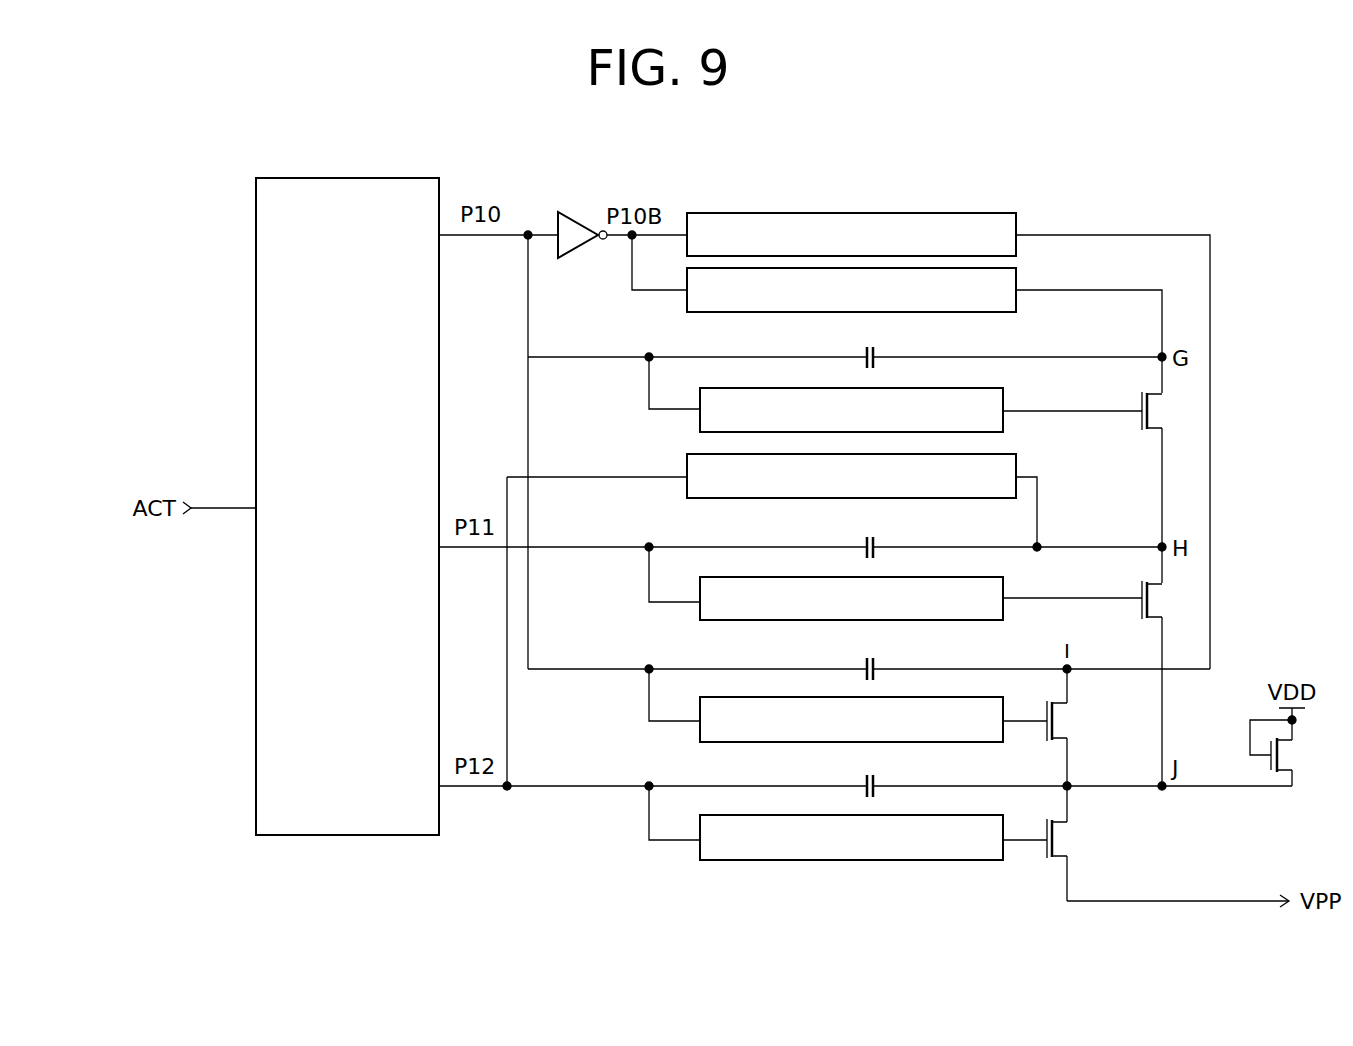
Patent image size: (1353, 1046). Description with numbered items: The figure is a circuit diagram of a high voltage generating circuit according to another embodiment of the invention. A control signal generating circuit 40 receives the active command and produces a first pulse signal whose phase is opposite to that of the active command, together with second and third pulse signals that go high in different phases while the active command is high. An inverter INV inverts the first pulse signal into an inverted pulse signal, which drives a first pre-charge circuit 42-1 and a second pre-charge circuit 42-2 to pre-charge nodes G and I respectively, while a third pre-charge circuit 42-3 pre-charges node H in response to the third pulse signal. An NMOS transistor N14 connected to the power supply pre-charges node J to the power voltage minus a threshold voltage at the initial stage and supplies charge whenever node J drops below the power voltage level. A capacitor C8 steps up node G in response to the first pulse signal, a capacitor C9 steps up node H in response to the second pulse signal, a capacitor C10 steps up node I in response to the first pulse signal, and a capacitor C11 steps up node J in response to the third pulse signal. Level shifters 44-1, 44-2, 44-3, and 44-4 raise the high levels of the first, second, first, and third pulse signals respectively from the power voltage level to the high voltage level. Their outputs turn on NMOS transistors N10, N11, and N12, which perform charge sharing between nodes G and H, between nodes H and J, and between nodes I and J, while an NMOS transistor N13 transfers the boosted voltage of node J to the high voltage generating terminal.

The control signal generating circuit 40 is at (432, 836).
The pre-charge circuit 42-1 is at (1017, 221).
The pre-charge circuit 42-2 is at (1017, 276).
The pre-charge circuit 42-3 is at (1017, 462).
The level shifter 44-1 is at (1004, 394).
The level shifter 44-2 is at (1004, 583).
The level shifter 44-3 is at (698, 737).
The level shifter 44-4 is at (698, 855).
The inverter INV is at (575, 250).
The capacitor C8 is at (845, 340).
The capacitor C9 is at (869, 530).
The capacitor C10 is at (869, 652).
The capacitor C11 is at (869, 771).
The NMOS transistor N10 is at (1168, 411).
The NMOS transistor N11 is at (1168, 600).
The NMOS transistor N12 is at (1073, 721).
The NMOS transistor N13 is at (1073, 838).
The NMOS transistor N14 is at (1286, 753).